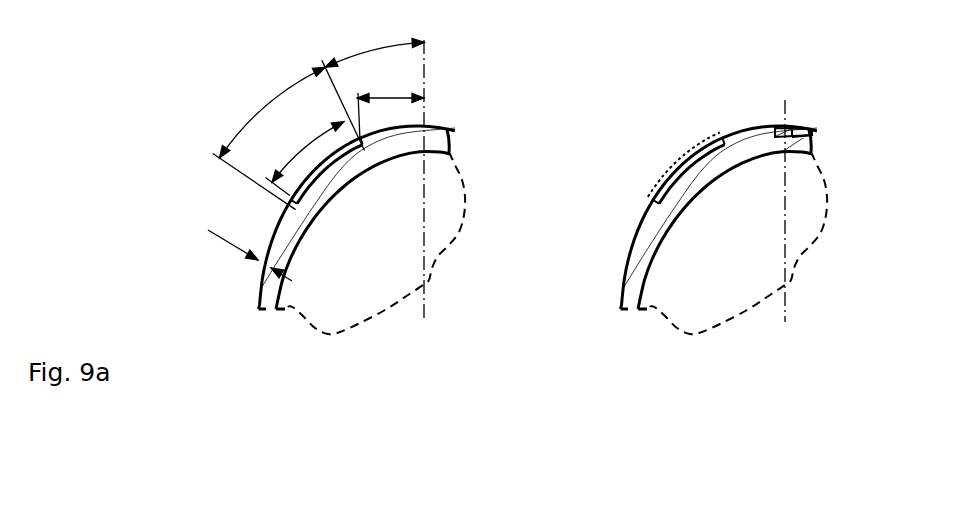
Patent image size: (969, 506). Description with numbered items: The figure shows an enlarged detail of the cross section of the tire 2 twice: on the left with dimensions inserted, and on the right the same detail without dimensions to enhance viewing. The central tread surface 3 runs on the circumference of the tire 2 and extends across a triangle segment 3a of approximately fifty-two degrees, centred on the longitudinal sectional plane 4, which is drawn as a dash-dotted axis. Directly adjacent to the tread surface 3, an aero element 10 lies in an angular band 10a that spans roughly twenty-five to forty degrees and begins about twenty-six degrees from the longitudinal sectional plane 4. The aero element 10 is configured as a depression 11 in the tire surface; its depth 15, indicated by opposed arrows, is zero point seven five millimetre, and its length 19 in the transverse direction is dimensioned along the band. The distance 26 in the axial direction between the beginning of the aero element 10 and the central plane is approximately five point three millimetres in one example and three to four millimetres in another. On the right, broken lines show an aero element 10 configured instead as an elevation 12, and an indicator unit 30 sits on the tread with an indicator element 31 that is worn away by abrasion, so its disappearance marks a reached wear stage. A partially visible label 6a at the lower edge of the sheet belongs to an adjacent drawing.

The tire 2 is at (450, 129).
The tread surface 3 is at (394, 44).
The triangle segment 3a is at (367, 50).
The longitudinal sectional plane 4 is at (424, 199).
The aero element 10 is at (318, 173).
The angular band 10a is at (240, 131).
The depression 11 is at (681, 181).
The elevation 12 is at (648, 203).
The depth 15 is at (274, 268).
The length in the transverse direction 19 is at (318, 143).
The distance 26 is at (390, 104).
The marking element 30 is at (792, 121).
The indicator element 31 is at (812, 131).
The partial numeral of adjacent figure 6a is at (410, 501).